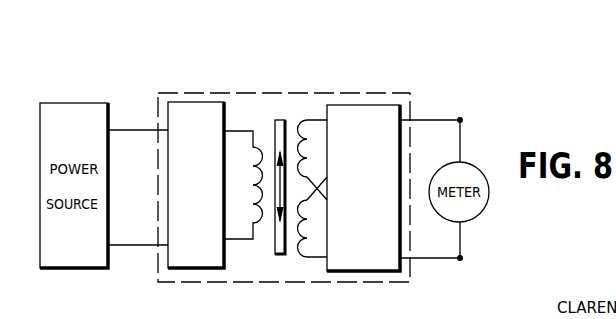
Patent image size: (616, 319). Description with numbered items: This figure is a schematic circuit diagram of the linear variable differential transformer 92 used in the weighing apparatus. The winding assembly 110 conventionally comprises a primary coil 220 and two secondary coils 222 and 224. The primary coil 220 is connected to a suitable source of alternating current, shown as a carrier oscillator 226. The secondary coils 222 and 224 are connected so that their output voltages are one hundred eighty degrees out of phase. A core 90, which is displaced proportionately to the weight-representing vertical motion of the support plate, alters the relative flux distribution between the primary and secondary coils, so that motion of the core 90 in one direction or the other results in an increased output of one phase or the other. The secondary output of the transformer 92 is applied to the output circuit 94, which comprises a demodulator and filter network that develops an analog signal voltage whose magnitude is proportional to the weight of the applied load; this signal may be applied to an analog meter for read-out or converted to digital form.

The winding assembly 110 is at (253, 105).
The carrier oscillator 226 is at (195, 102).
The primary coil 220 is at (260, 222).
The core 90 is at (282, 121).
The linear variable differential transformer 92 is at (362, 71).
The secondary coil 224 is at (309, 122).
The secondary coil 222 is at (302, 256).
The output circuit 94 is at (392, 105).